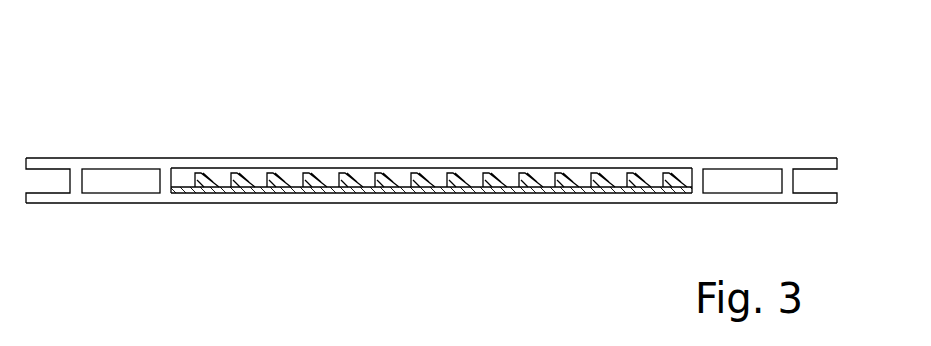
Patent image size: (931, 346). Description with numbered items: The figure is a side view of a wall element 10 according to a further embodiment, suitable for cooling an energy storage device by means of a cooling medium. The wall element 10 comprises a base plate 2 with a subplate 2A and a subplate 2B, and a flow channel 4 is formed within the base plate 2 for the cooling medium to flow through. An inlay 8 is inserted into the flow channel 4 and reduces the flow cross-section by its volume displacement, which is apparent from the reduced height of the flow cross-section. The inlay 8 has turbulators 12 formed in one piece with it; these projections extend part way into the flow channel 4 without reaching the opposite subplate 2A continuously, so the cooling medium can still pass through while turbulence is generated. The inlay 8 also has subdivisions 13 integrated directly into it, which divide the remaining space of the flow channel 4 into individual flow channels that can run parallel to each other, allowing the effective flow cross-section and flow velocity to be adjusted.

The wall element 10 is at (148, 101).
The base plate 2 is at (447, 167).
The subplate 2A is at (525, 168).
The lower side of insert element 2B is at (593, 193).
The flow channel 4 is at (725, 178).
The inlay 8 is at (433, 188).
The turbulators 12 is at (333, 168).
The subdivisions 13 is at (290, 182).